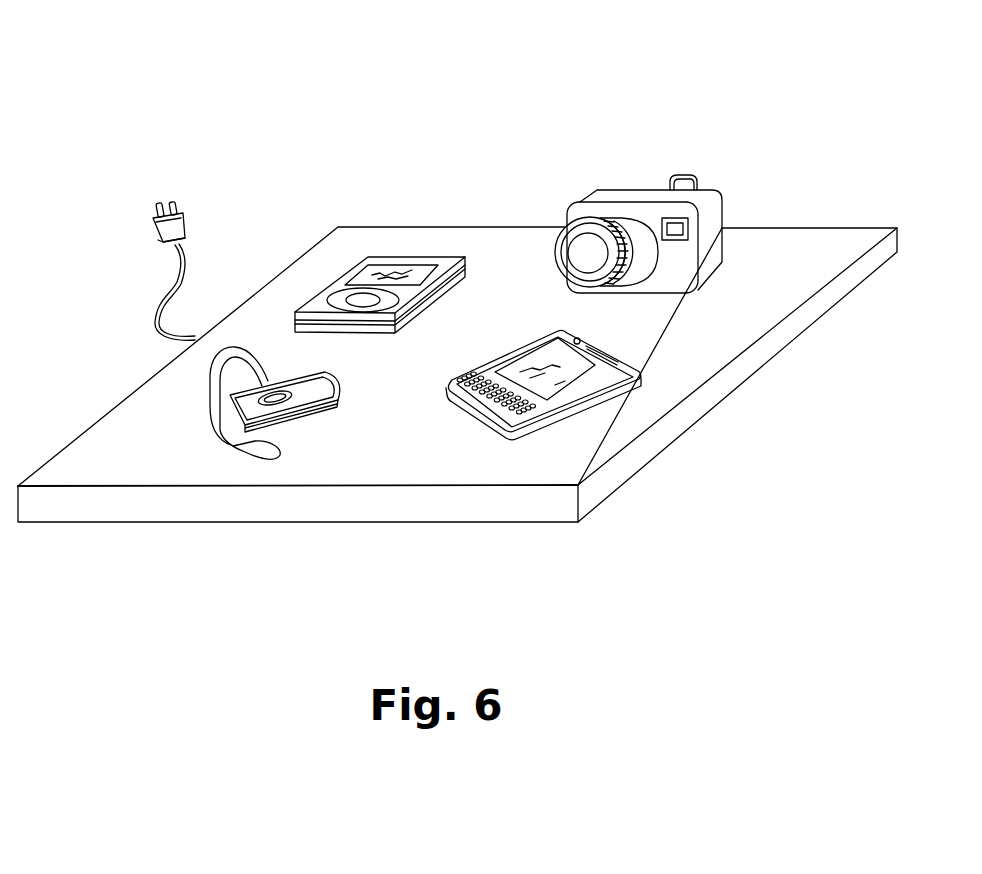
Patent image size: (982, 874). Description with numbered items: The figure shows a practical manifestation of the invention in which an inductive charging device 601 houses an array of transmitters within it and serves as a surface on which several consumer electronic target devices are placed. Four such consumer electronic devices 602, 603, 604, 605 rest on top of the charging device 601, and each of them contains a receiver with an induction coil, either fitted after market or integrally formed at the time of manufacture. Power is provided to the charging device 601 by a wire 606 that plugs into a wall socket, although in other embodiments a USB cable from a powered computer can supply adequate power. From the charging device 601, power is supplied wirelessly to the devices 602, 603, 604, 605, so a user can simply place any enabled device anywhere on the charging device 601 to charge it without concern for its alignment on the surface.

The inductive charging device 601 is at (762, 70).
The consumer electronic device 602 is at (393, 270).
The consumer electronic device 603 is at (630, 190).
The consumer electronic device 604 is at (560, 372).
The consumer electronic device 605 is at (205, 420).
The wire 606 is at (190, 273).